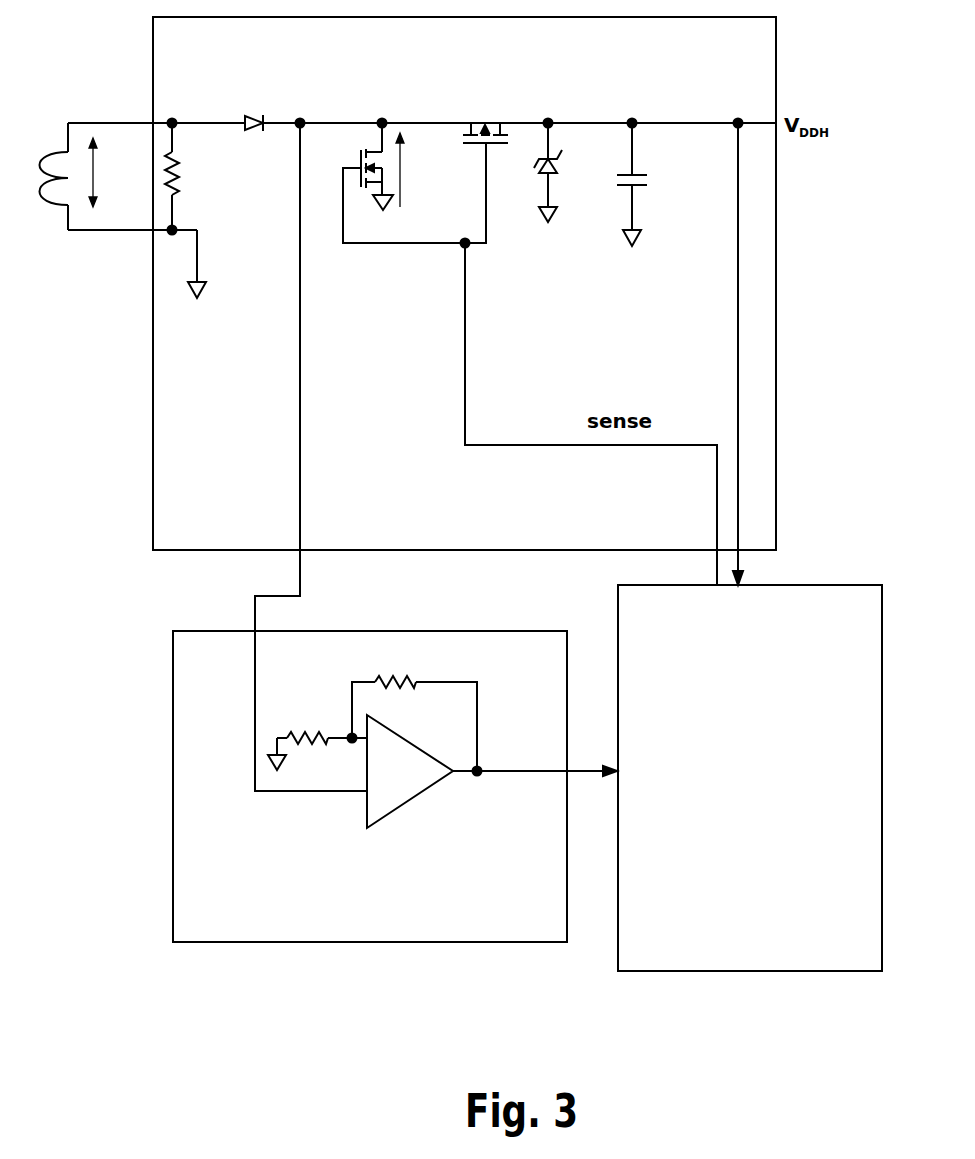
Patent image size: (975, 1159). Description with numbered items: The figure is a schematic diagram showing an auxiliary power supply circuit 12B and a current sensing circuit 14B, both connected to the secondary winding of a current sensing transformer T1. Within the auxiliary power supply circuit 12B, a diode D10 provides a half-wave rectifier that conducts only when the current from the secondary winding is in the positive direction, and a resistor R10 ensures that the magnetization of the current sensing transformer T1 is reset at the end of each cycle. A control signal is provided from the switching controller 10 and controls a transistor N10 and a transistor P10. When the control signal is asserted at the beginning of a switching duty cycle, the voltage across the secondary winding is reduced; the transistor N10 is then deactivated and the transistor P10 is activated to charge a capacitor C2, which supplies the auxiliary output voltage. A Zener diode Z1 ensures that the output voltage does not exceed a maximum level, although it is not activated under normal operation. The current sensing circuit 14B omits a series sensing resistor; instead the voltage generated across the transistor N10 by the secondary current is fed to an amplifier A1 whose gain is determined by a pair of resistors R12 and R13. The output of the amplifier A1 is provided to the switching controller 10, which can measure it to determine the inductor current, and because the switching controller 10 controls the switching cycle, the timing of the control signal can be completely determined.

The auxiliary power supply circuit 12B is at (405, 54).
The switching controller 10 is at (768, 647).
The current sensing circuit 14B is at (470, 904).
The current sensing transformer T1 is at (111, 189).
The resistor R10 is at (200, 210).
The diode D10 is at (254, 106).
The transistor N10 is at (414, 185).
The transistor P10 is at (487, 116).
The Zener diode Z1 is at (564, 172).
The capacitor C2 is at (649, 184).
The amplifier A1 is at (416, 781).
The resistor R12 is at (317, 739).
The resistor R13 is at (414, 711).